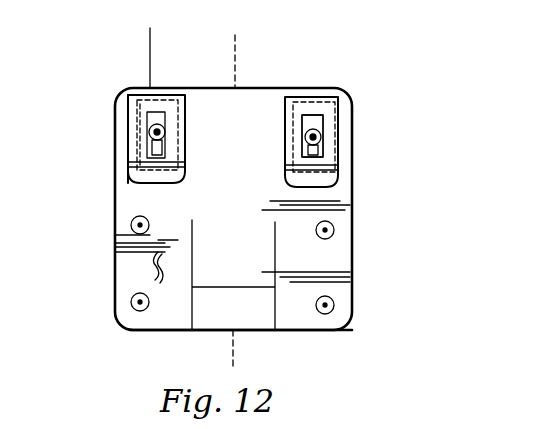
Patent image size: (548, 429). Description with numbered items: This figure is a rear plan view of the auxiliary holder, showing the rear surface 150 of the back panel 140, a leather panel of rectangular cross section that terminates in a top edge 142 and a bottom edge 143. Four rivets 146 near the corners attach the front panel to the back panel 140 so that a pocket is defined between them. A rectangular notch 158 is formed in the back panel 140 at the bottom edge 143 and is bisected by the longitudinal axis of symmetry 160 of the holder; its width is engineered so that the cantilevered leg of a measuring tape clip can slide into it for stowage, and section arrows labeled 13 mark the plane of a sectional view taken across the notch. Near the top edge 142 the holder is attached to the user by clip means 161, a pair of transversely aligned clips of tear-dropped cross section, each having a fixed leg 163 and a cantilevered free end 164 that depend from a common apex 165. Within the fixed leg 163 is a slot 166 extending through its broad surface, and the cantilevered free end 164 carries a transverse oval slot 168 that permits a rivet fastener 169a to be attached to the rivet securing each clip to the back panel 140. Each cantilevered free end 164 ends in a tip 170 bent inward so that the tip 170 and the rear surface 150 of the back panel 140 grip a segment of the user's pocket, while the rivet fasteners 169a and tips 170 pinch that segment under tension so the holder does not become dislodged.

The section line 13- 13 is at (262, 53).
The back panel 140 is at (314, 88).
The top edge 142 is at (244, 88).
The bottom edge 143 is at (148, 331).
The rivets 146 is at (132, 220).
The rear surface 150 is at (138, 260).
The rectangular notch 158 is at (205, 285).
The longitudinal axis of symmetry 160 is at (234, 63).
The clip means 161 is at (142, 88).
The fixed leg 163 is at (136, 155).
The cantilevered free end 164 is at (130, 112).
The common apex 165 is at (173, 53).
The slot 166 is at (166, 130).
The transverse oval slot 168 is at (172, 162).
The rivet fastener 169a is at (322, 138).
The tip 170 is at (178, 184).